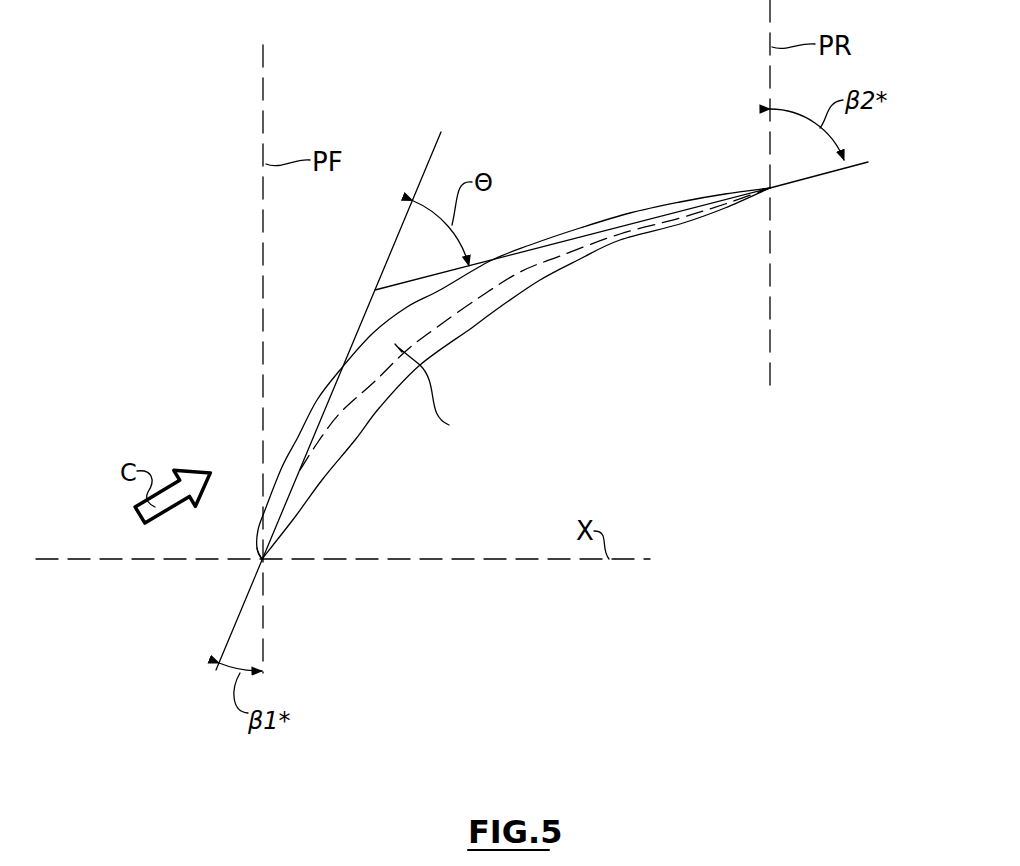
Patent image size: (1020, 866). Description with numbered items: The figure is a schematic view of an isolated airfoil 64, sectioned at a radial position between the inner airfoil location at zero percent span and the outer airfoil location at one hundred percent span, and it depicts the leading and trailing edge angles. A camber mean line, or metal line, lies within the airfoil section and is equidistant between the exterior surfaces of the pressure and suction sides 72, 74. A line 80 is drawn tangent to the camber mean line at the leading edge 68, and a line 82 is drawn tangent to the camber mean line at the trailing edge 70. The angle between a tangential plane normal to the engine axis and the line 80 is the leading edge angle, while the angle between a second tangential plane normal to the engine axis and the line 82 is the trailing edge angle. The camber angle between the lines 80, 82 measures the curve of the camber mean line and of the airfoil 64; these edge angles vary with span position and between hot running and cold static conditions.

The airfoil 64 is at (561, 338).
The leading edge 68 is at (265, 587).
The trailing edge 70 is at (772, 190).
The pressure side 72 is at (498, 305).
The suction side 74 is at (328, 384).
The line 80 is at (433, 150).
The line 82 is at (484, 262).